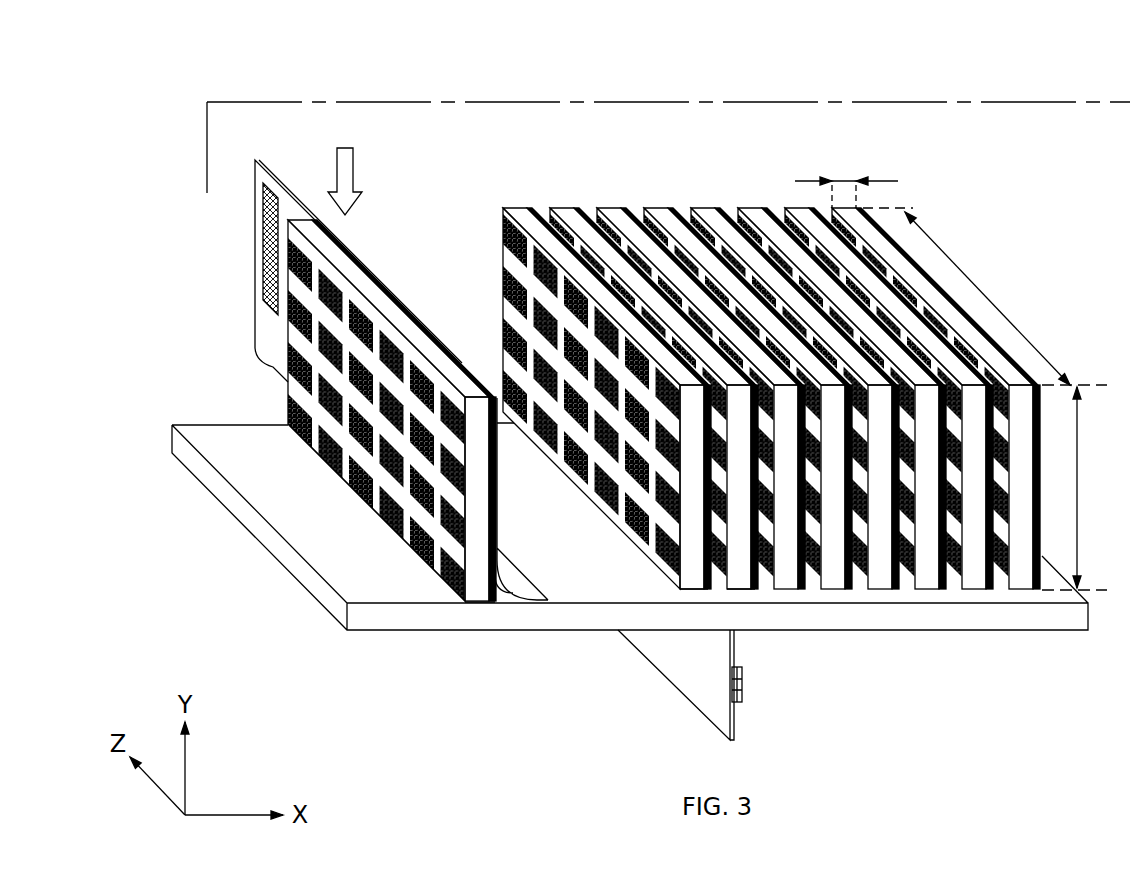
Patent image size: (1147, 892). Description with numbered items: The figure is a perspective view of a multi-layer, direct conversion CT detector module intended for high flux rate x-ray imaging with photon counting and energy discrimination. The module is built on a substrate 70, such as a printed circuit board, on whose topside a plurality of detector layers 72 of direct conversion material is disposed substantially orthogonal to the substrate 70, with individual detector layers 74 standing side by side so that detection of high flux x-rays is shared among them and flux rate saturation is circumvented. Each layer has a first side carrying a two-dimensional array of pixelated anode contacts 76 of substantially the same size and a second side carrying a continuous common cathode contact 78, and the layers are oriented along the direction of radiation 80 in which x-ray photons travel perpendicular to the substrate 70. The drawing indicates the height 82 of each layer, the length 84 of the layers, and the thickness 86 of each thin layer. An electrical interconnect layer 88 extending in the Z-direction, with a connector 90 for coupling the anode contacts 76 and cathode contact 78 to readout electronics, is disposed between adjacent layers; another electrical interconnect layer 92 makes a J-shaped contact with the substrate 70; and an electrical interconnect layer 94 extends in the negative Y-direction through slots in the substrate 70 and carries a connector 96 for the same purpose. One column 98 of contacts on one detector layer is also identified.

The substrate 70 is at (262, 527).
The plurality of detector layers 72 is at (433, 100).
The individual detector layers 74 is at (740, 582).
The pixelated anode contacts 76 is at (358, 495).
The common cathode contact 78 is at (480, 386).
The direction of radiation 80 is at (356, 172).
The height 82 is at (1079, 490).
The length 84 is at (990, 296).
The thickness 86 is at (840, 180).
The electrical interconnect layer 88 is at (297, 199).
The connector 90 is at (263, 262).
The electrical interconnect layer 92 is at (532, 604).
The electrical interconnect layer 94 is at (693, 677).
The connector 96 is at (745, 689).
The column 98 is at (447, 603).